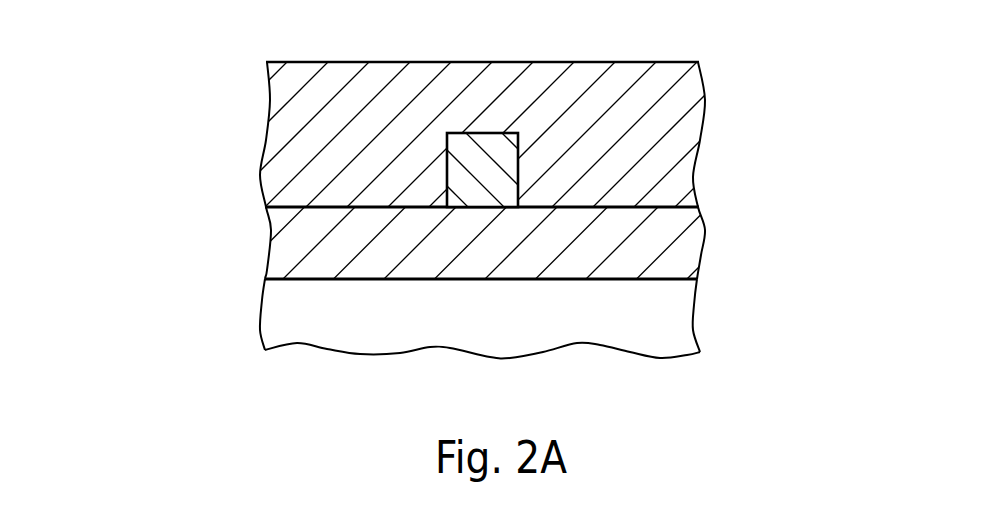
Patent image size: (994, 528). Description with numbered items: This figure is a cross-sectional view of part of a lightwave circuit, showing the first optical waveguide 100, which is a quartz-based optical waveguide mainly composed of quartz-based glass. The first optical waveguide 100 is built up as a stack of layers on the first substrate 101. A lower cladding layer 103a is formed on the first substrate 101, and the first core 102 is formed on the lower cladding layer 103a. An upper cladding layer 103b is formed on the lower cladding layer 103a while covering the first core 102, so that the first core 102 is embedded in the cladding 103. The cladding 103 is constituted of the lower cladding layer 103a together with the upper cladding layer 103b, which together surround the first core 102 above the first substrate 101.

The first optical waveguide 100 is at (472, 210).
The first substrate 101 is at (695, 313).
The first core 102 is at (455, 165).
The cladding 103 is at (486, 170).
The lower cladding layer 103a is at (703, 240).
The upper cladding layer 103b is at (700, 133).